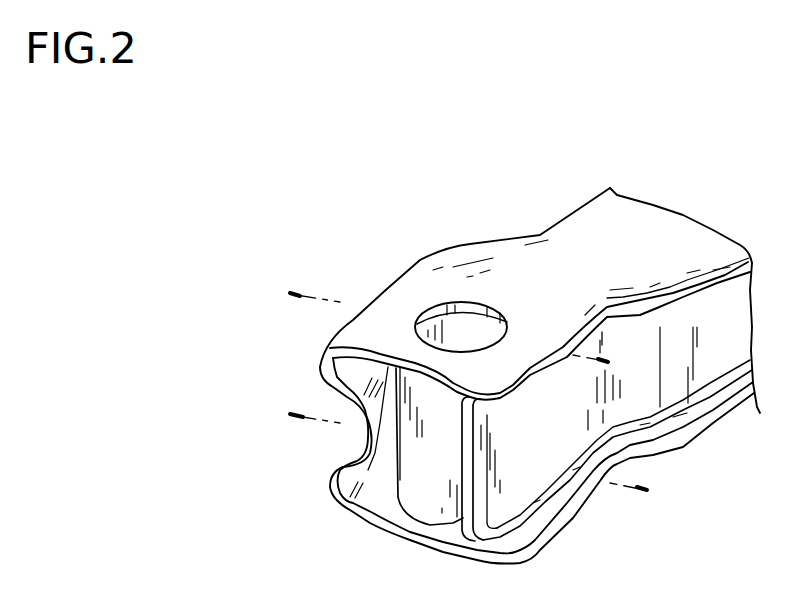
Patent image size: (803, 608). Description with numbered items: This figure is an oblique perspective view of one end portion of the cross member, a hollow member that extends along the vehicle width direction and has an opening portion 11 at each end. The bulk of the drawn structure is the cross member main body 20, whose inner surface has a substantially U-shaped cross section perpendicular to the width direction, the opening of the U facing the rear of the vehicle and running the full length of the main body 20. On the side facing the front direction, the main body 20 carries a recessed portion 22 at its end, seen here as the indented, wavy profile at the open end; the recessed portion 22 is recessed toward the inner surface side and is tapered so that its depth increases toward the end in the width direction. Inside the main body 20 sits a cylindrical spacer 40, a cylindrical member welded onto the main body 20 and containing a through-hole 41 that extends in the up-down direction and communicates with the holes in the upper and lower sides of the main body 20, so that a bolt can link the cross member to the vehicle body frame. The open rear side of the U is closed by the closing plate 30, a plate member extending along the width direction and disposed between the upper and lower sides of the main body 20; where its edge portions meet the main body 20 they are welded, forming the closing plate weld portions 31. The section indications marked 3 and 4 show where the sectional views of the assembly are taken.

The cross member main body 20 is at (550, 253).
The through-hole 41 is at (443, 340).
The recessed portion 22 is at (365, 436).
The opening portion 11 is at (375, 505).
The cylindrical spacer 40 is at (423, 510).
The closing plate 30 is at (710, 380).
The closing plate weld portion 31 is at (558, 475).
The section line IV-IV 4 is at (332, 268).
The section line III-III 3 is at (298, 412).